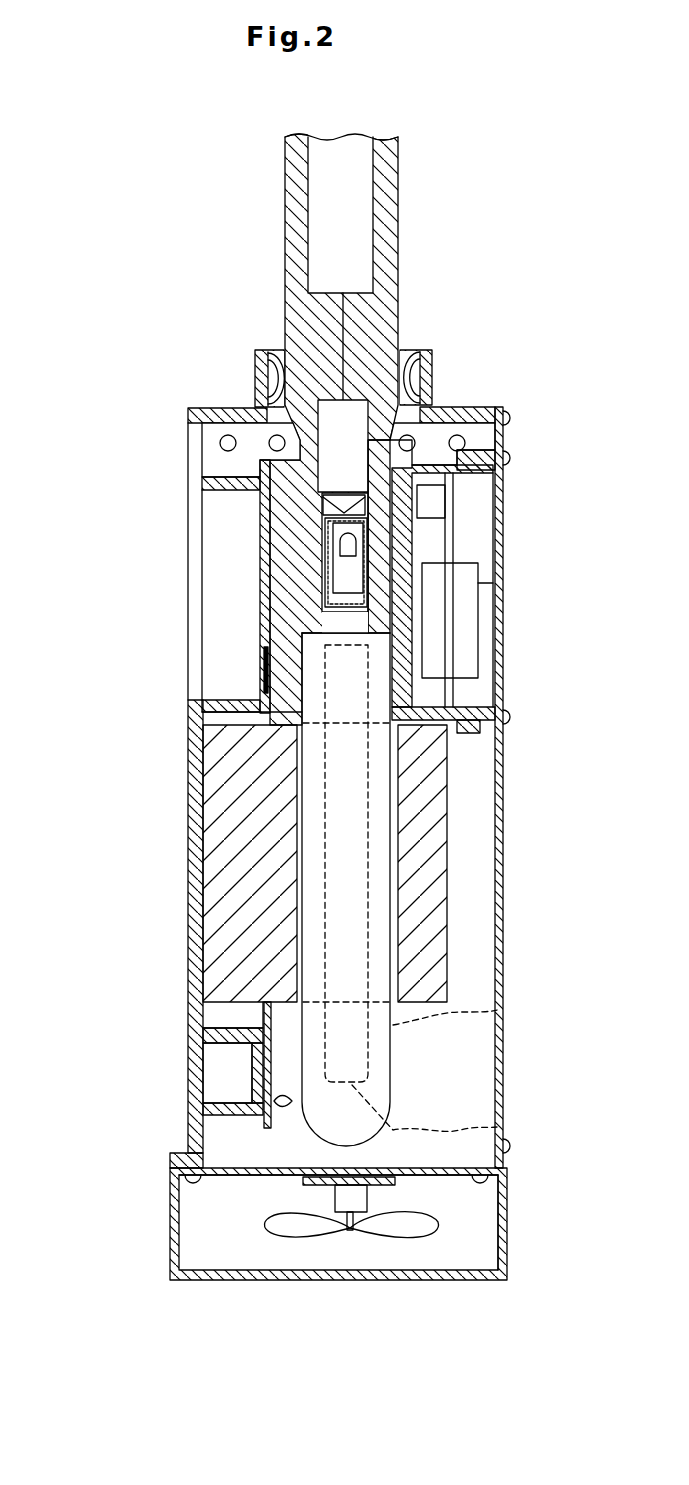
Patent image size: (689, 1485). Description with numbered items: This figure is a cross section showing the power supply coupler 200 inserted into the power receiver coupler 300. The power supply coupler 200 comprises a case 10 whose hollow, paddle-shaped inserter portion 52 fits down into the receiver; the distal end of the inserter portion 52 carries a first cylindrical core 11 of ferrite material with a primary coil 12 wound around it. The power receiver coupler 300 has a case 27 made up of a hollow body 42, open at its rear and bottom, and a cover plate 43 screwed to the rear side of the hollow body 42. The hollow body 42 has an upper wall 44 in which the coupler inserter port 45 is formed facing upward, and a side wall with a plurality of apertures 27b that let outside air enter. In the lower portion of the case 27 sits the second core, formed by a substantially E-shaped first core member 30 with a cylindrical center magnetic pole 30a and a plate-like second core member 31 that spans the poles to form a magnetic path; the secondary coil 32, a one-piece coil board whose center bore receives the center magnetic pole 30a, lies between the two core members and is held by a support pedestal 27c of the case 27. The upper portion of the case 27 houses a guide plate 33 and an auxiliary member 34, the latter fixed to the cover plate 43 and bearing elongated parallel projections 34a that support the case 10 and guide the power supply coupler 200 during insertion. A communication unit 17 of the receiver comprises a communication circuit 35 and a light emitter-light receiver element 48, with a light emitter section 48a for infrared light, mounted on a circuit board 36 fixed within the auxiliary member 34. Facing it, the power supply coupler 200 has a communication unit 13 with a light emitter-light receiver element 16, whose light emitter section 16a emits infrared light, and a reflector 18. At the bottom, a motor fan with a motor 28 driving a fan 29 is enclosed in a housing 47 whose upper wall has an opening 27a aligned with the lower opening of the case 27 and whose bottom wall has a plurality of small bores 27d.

The power supply coupler 200 is at (403, 241).
The coupler inserter port 45 is at (402, 350).
The upper wall 44 is at (425, 407).
The case 10 is at (260, 412).
The apertures 27b is at (223, 412).
The reflector 18 is at (343, 494).
The light emitter-light receiver element 16 is at (322, 553).
The light emitter section 16a is at (322, 538).
The projections 34a is at (392, 625).
The communication unit 13 is at (352, 616).
The guide plate 33 is at (260, 640).
The communication unit 17 is at (497, 592).
The auxiliary member 34 is at (487, 733).
The light emitter section 48a is at (433, 512).
The light emitter-light receiver element 48 is at (413, 498).
The circuit board 36 is at (452, 546).
The communication circuit 35 is at (470, 654).
The cover plate 43 is at (500, 850).
The primary coil 12 is at (511, 1146).
The hollow body 42 is at (189, 870).
The case 27 is at (189, 985).
The support pedestal 27c is at (252, 1070).
The secondary coil 32 is at (265, 1098).
The first core member 30 is at (203, 912).
The second core member 31 is at (440, 905).
The first cylindrical core 11 is at (503, 1010).
The center magnetic pole 30a is at (300, 792).
The inserter portion 52 is at (397, 1068).
The power receiver coupler 300 is at (507, 1063).
The small bores 27d is at (262, 1280).
The housing 47 is at (507, 1265).
The opening 27a is at (423, 1182).
The motor 28 is at (342, 1200).
The fan 29 is at (417, 1236).